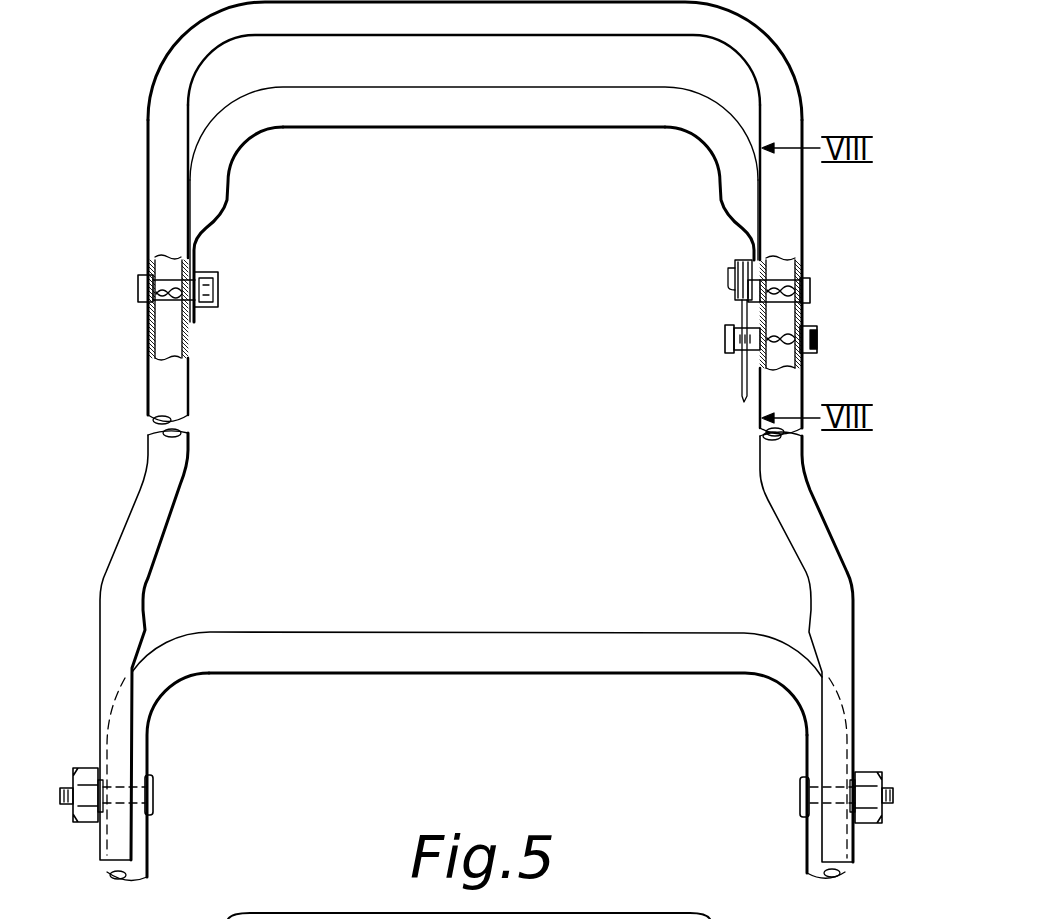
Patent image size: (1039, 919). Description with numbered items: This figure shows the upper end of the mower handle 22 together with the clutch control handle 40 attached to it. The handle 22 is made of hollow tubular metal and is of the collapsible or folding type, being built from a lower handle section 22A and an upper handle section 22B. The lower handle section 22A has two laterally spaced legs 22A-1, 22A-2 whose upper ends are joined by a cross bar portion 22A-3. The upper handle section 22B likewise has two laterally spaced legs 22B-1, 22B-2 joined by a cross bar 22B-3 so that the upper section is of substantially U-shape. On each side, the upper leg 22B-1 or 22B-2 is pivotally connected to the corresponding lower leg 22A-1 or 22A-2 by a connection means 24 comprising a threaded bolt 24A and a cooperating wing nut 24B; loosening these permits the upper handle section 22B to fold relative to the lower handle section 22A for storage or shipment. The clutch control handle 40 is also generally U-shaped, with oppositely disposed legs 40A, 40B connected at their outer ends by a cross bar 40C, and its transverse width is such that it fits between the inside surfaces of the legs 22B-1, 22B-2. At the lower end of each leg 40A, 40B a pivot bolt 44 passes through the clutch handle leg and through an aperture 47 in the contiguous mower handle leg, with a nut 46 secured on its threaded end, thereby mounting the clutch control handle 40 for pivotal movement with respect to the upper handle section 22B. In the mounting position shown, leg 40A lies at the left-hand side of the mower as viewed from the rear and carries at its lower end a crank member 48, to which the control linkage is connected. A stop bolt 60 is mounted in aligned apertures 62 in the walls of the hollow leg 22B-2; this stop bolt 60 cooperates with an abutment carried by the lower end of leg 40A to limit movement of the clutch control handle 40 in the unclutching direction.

The handle 22 is at (484, 444).
The lower handle section 22A is at (476, 657).
The leg of lower handle section 22A-1 is at (146, 862).
The leg of lower handle section 22A-2 is at (804, 862).
The cross bar portion 22A-3 is at (598, 614).
The upper handle section 22B is at (484, 219).
The leg of upper handle section 22B-1 is at (156, 390).
The leg of upper handle section 22B-2 is at (806, 386).
The cross bar 22B-3 is at (455, 22).
The connection means 24 is at (163, 786).
The threaded bolt 24A is at (64, 787).
The wing nut 24B is at (80, 823).
The clutch control handle 40 is at (474, 182).
The leg of clutch control handle 40A is at (726, 204).
The leg of clutch control handle 40B is at (222, 206).
The cross bar 40C is at (375, 93).
The pivot bolt 44 is at (155, 290).
The nut 46 is at (205, 280).
The aperture 47 is at (168, 294).
The crank member 48 is at (722, 303).
The stop bolt 60 is at (724, 343).
The aperture 62 is at (806, 364).